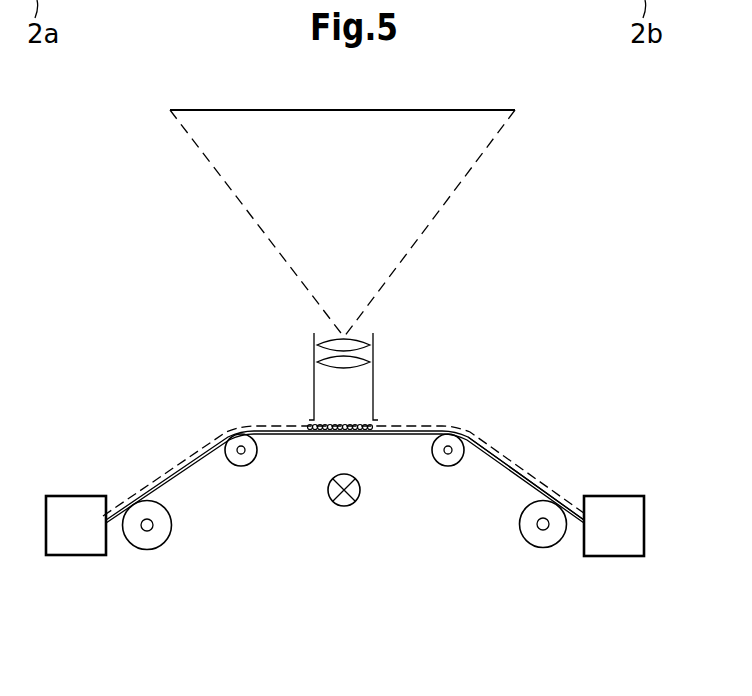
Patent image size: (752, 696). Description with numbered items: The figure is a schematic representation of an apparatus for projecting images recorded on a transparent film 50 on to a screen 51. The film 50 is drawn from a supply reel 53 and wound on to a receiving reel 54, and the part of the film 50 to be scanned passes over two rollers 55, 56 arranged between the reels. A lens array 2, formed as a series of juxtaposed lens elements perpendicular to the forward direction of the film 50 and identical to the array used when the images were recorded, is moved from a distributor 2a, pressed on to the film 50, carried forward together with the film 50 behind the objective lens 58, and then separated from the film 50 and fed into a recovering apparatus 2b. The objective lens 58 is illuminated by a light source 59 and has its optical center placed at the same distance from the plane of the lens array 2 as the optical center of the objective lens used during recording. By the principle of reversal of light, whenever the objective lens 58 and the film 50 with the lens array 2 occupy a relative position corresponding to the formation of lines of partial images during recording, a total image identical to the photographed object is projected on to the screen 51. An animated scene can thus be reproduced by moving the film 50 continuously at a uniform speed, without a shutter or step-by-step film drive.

The screen 51 is at (484, 110).
The objective lens 58 is at (314, 367).
The lens array 2 is at (419, 421).
The distributor 2a is at (74, 548).
The recovering apparatus 2b is at (619, 545).
The supply reel 53 is at (158, 538).
The receiving reel 54 is at (540, 541).
The roller 55 is at (241, 466).
The roller 56 is at (448, 466).
The light source 59 is at (344, 506).
The transparent film 50 is at (511, 478).